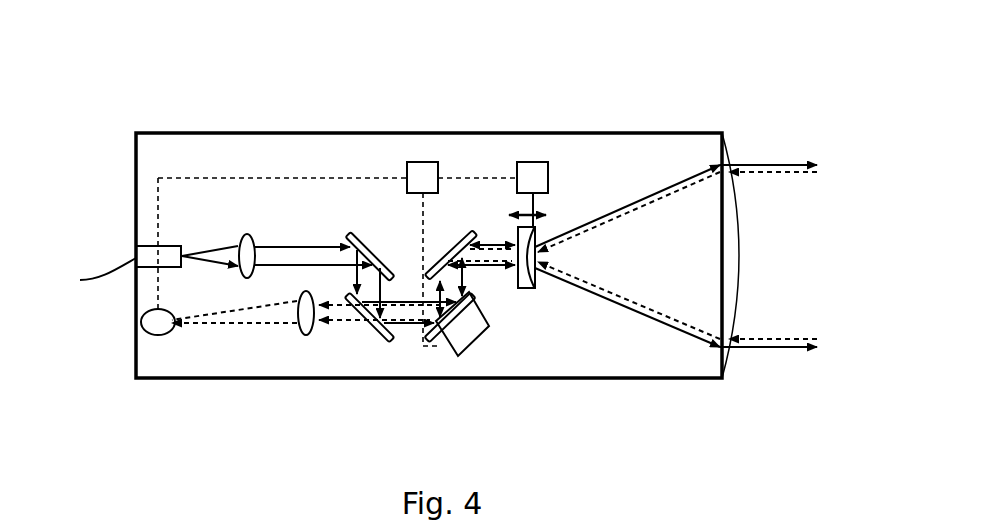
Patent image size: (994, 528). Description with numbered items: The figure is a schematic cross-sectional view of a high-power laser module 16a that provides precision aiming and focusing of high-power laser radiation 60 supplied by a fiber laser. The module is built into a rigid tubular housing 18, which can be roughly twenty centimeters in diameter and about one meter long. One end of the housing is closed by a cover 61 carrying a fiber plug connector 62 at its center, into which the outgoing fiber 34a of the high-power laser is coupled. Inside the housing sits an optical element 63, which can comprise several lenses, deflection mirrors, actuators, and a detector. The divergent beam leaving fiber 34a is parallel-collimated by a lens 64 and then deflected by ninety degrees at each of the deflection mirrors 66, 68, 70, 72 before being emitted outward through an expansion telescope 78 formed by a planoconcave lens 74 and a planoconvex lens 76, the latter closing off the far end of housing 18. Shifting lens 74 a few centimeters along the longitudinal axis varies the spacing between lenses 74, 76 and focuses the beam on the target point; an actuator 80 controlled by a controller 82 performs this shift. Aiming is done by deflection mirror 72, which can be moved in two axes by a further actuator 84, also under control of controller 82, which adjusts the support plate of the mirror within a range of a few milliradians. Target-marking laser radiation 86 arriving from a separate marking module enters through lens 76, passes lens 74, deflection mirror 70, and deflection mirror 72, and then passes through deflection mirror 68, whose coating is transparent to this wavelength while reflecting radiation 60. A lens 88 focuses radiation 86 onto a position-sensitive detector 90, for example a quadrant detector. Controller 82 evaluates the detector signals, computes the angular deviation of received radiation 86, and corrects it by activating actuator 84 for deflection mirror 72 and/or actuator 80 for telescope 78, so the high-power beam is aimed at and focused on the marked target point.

The laser module 16a is at (256, 67).
The housing 18 is at (190, 379).
The outgoing fiber 34a is at (100, 279).
The high-power laser radiation 60 is at (213, 250).
The cover 61 is at (136, 320).
The fiber plug connector 62 is at (136, 258).
The optical element 63 is at (550, 150).
The lens 64 is at (247, 234).
The deflection mirror 66 is at (360, 235).
The deflection mirror 68 is at (370, 343).
The deflection mirror 70 is at (462, 232).
The deflection mirror 72 is at (423, 340).
The planoconcave lens 74 is at (527, 290).
The planoconvex lens 76 is at (735, 285).
The expansion telescope 78 is at (634, 163).
The actuator 80 is at (535, 162).
The controller 82 is at (416, 162).
The actuator 84 is at (470, 352).
The laser radiation 86 is at (248, 326).
The lens 88 is at (306, 336).
The position-sensitive detector 90 is at (146, 334).